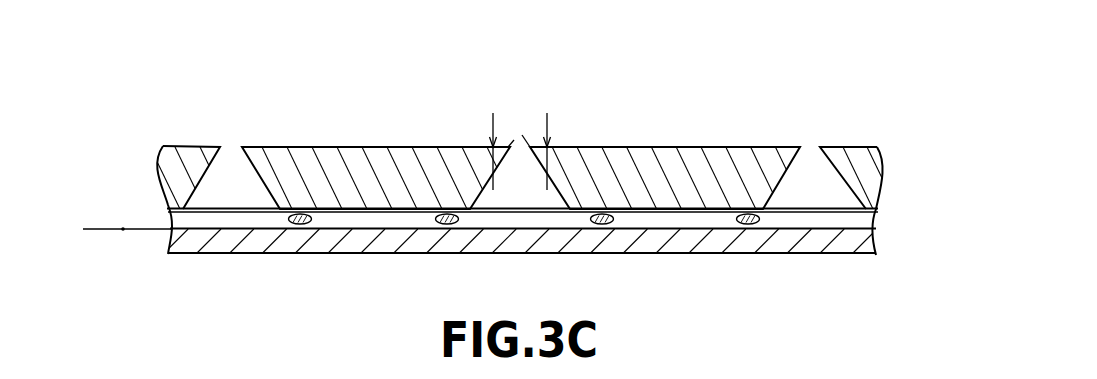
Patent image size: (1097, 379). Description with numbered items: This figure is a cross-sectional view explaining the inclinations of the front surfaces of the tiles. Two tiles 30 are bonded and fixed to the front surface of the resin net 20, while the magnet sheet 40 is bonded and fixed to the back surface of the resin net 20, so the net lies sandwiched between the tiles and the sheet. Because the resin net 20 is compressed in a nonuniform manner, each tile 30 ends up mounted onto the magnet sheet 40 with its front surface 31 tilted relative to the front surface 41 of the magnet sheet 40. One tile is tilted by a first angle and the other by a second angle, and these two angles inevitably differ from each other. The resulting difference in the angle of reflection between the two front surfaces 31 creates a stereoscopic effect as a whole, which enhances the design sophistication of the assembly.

The resin net 20 is at (243, 200).
The tile 30 is at (302, 108).
The front surface of the tile 31 is at (378, 146).
The magnet sheet 40 is at (318, 245).
The front surface of the magnet sheet 41 is at (123, 231).